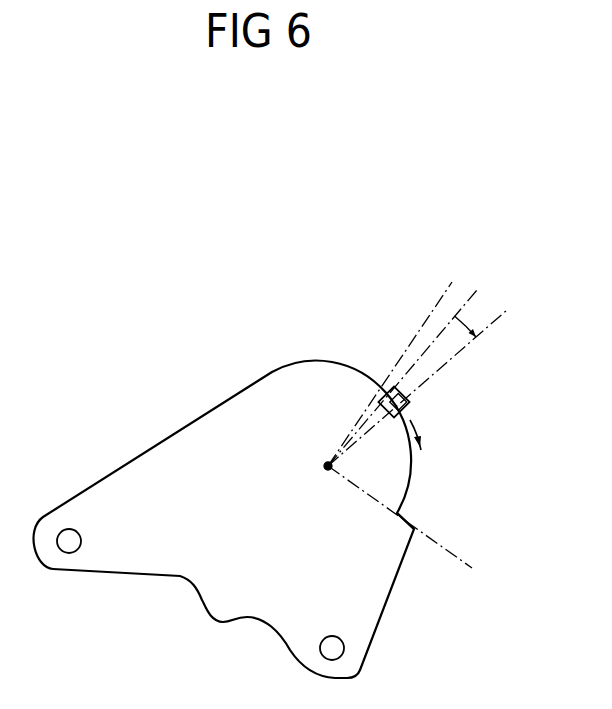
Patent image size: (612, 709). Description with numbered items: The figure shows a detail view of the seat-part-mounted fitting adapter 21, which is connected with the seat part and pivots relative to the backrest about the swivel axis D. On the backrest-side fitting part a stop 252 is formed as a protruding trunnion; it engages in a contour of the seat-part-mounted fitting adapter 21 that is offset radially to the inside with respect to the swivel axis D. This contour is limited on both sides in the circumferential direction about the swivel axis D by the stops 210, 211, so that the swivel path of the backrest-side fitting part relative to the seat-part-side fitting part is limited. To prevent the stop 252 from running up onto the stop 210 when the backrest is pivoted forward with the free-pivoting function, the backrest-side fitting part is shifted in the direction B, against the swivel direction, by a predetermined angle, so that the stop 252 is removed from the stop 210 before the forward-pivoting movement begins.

The seat-part-mounted fitting adapter 21 is at (372, 598).
The stop 211 is at (412, 525).
The stop 252 is at (403, 407).
The stop 210 is at (389, 388).
The swivel axis D is at (326, 470).
The direction B is at (430, 437).